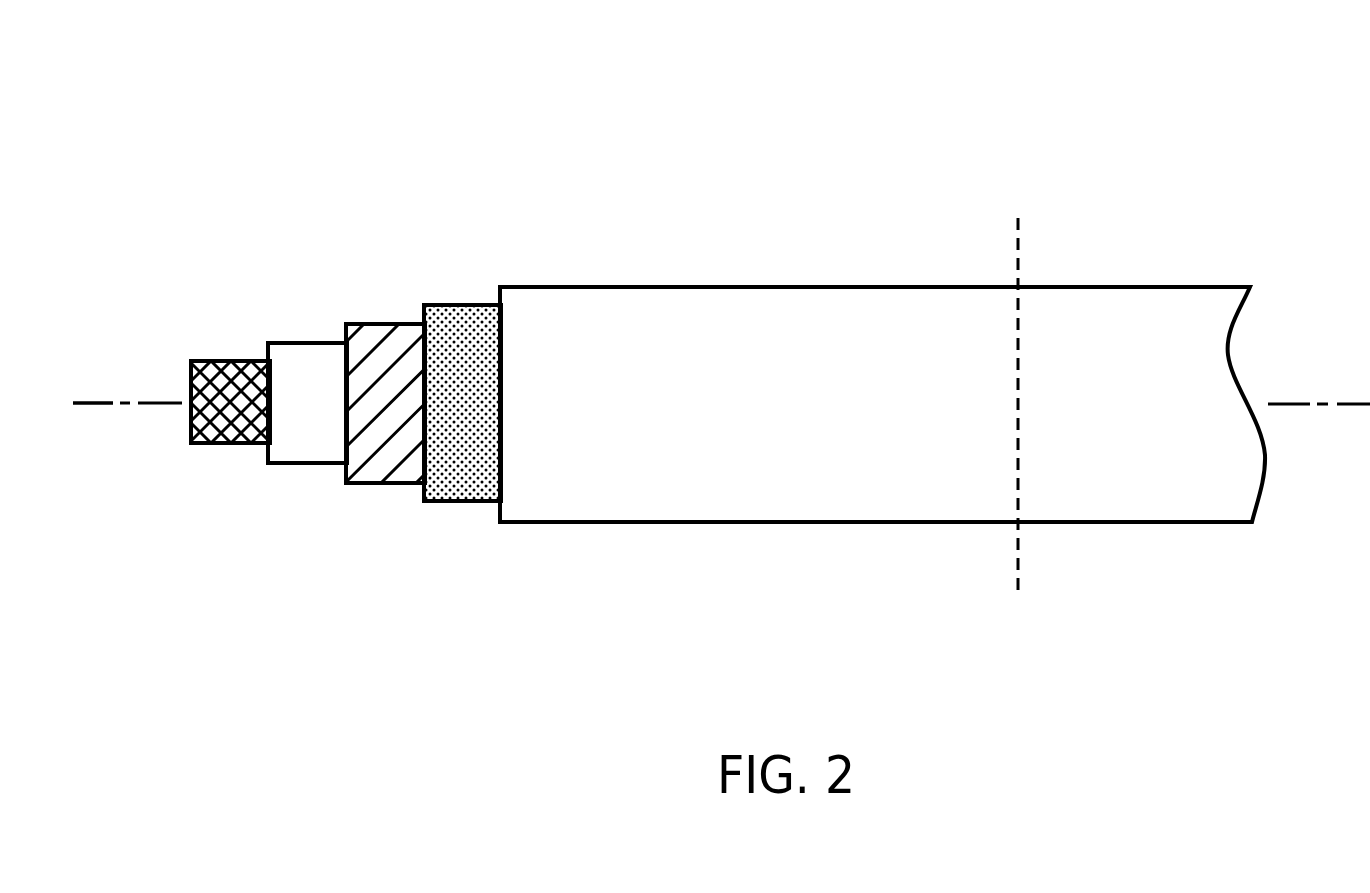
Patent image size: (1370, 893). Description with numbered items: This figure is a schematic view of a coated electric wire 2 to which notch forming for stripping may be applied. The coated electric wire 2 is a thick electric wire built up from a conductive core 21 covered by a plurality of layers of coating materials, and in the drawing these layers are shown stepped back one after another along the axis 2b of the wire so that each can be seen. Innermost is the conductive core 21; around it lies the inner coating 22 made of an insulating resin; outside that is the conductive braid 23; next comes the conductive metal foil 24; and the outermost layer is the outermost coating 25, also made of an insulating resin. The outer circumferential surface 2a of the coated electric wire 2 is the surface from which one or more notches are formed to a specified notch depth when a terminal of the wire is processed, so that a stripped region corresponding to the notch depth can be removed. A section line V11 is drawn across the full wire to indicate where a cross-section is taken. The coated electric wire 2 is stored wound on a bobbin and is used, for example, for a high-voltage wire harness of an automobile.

The coated electric wire 2 is at (838, 67).
The outer circumferential surface 2a is at (803, 362).
The cable axis 2b is at (95, 402).
The conductive core 21 is at (228, 360).
The inner coating 22 is at (305, 342).
The conductive braid 23 is at (383, 324).
The conductive metal foil 24 is at (460, 305).
The outermost coating 25 is at (577, 286).
The section line V11 is at (1020, 233).